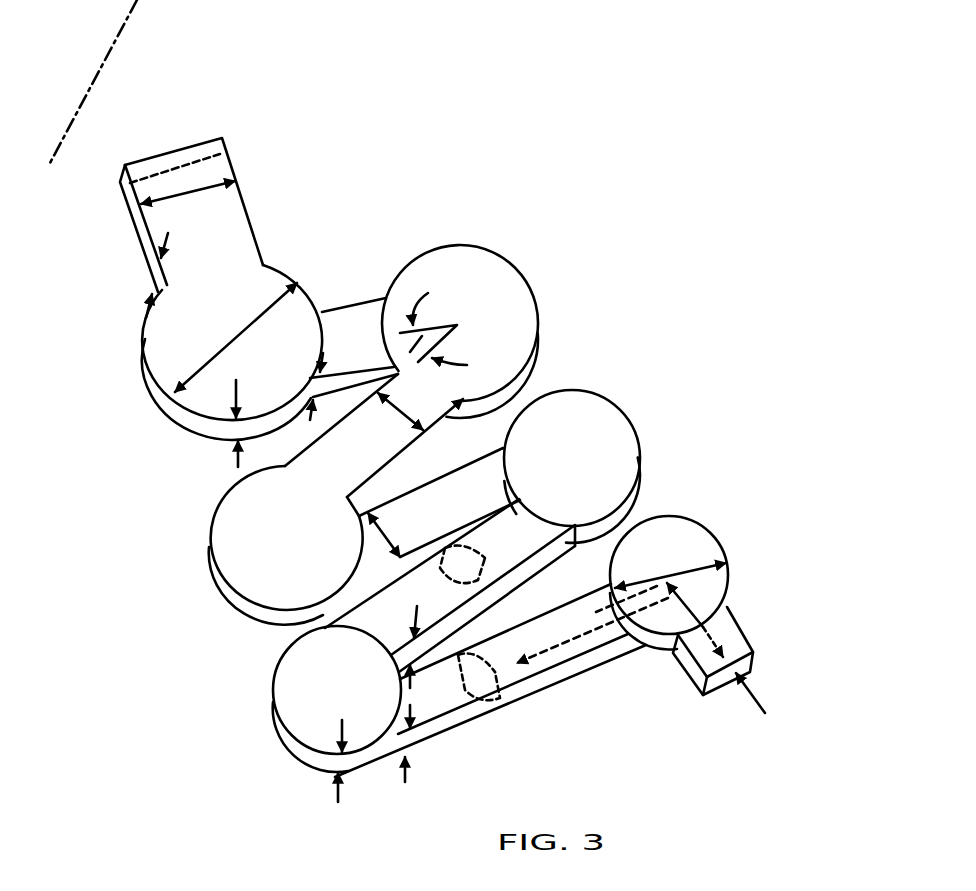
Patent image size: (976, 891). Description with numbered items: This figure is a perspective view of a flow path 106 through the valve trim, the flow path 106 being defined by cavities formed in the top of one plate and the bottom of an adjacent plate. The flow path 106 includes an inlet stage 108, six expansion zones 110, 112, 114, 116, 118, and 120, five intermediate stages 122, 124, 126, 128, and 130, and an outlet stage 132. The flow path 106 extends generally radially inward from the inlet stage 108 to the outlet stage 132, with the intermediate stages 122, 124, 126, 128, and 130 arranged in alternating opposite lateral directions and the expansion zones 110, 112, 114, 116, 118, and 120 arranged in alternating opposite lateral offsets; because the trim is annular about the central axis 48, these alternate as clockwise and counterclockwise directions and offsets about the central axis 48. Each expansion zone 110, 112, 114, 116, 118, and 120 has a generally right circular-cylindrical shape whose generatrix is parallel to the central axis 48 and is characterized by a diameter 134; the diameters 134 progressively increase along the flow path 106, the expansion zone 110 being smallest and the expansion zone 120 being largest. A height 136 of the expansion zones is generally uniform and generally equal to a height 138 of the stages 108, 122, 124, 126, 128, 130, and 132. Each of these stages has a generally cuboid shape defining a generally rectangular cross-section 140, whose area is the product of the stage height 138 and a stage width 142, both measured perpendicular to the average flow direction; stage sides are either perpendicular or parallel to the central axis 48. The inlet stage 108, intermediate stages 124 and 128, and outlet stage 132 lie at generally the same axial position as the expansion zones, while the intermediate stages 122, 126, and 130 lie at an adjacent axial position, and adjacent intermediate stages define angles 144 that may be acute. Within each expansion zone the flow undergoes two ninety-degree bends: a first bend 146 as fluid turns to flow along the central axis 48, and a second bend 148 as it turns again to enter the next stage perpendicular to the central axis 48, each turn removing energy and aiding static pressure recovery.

The central axis 48 is at (125, 25).
The flow path 106 is at (601, 128).
The inlet stage 108 is at (690, 667).
The expansion zone 110 is at (640, 638).
The expansion zone 112 is at (290, 745).
The expansion zone 114 is at (612, 420).
The expansion zone 116 is at (240, 598).
The expansion zone 118 is at (505, 283).
The expansion zone 120 is at (158, 387).
The intermediate stage 122 is at (458, 727).
The intermediate stage 124 is at (540, 560).
The intermediate stage 126 is at (447, 403).
The intermediate stage 128 is at (343, 447).
The intermediate stage 130 is at (350, 313).
The outlet stage 132 is at (143, 223).
The diameter 134 is at (232, 338).
The height 136 is at (235, 430).
The height 138 is at (158, 283).
The cross-section 140 is at (172, 160).
The stage width 142 is at (187, 198).
The angle 144 is at (425, 340).
The bend 146 is at (700, 630).
The bend 148 is at (625, 611).